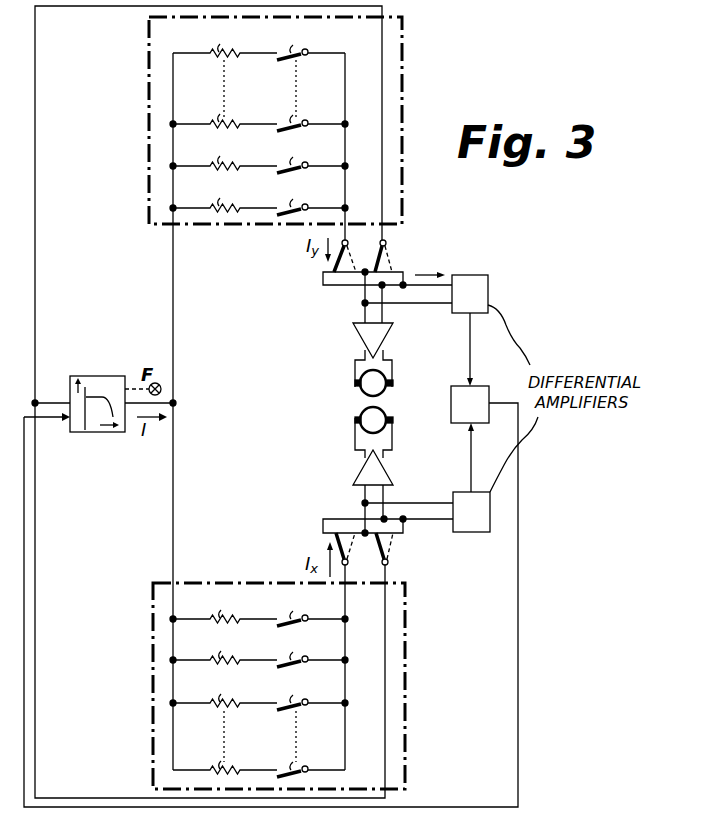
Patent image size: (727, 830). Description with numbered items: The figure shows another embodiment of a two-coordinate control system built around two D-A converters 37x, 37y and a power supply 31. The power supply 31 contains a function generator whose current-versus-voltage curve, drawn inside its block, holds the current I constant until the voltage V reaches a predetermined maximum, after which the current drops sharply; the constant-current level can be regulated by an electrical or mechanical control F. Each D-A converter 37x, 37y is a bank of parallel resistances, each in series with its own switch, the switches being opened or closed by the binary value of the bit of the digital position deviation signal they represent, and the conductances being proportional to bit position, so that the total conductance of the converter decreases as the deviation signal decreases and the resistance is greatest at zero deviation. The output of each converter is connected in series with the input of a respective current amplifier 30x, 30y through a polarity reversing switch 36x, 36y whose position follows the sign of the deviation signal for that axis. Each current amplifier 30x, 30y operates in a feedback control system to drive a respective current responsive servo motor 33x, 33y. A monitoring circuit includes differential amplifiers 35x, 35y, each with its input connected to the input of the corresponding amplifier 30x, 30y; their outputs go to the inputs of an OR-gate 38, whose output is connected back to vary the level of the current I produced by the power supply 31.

The power supply 31 is at (88, 377).
The current amplifier 30y is at (362, 337).
The current amplifier 30x is at (364, 472).
The current responsive servo motor 33y is at (361, 382).
The current responsive servo motor 33x is at (360, 414).
The differential amplifier 35y is at (469, 283).
The differential amplifier 35x is at (460, 532).
The polarity reversing switch 36y is at (390, 261).
The polarity reversing switch 36x is at (390, 548).
The D-A converter 37y is at (256, 226).
The D-A converter 37x is at (268, 582).
The OR-gate 38 is at (458, 386).